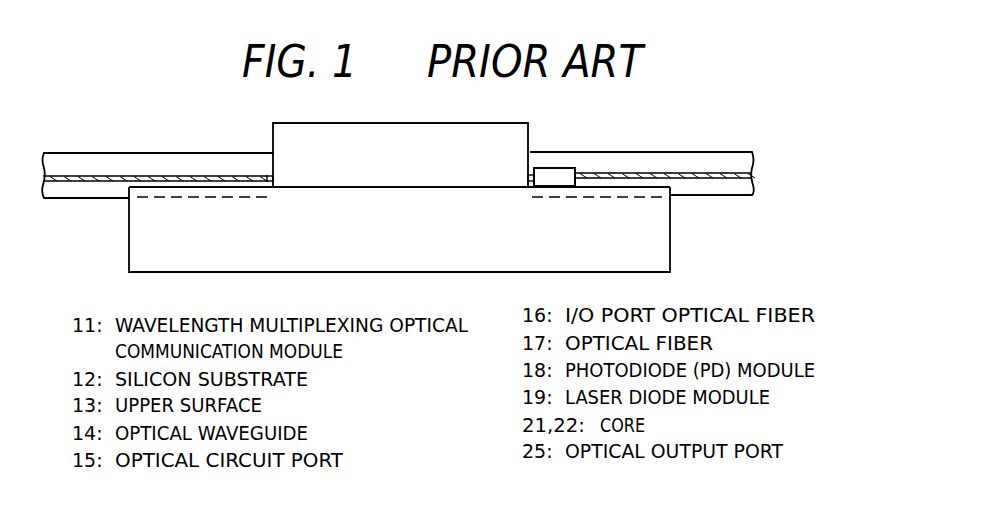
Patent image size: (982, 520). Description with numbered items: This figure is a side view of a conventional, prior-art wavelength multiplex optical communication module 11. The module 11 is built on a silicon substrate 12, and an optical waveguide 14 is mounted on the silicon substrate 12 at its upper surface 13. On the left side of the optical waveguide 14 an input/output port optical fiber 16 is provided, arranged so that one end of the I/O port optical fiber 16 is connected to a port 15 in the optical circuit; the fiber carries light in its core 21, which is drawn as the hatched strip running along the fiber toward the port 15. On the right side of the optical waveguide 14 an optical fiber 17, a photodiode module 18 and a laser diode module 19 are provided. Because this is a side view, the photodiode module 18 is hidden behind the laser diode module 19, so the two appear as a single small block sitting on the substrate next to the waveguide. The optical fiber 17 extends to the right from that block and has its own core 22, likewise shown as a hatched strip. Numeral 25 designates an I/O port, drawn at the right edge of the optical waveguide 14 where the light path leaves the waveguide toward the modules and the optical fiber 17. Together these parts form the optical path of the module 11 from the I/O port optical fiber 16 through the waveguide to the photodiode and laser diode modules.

The wavelength multiplex optical communication module 11 is at (646, 109).
The silicon substrate 12 is at (671, 245).
The upper surface 13 is at (366, 188).
The optical waveguide 14 is at (450, 123).
The port 15 is at (275, 177).
The I/O port optical fiber 16 is at (133, 153).
The optical fiber 17 is at (685, 152).
The photodiode module 18 is at (568, 168).
The laser diode module 19 is at (554, 177).
The core 21 is at (100, 181).
The core 22 is at (692, 179).
The I/O port 25 is at (527, 176).